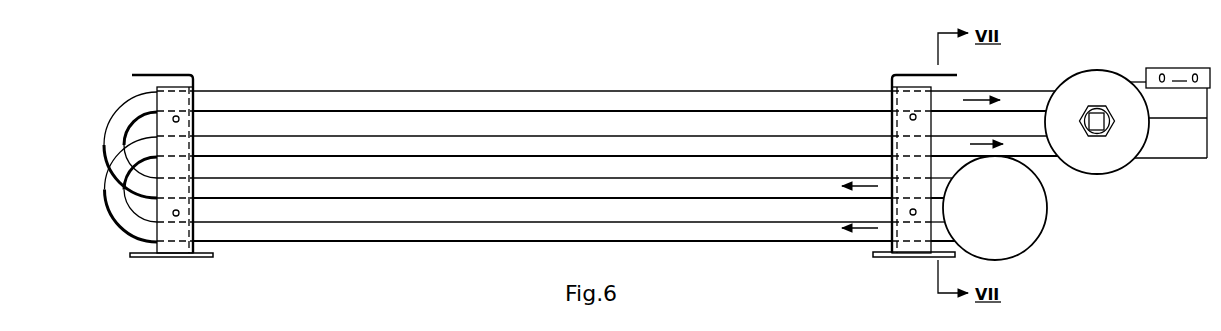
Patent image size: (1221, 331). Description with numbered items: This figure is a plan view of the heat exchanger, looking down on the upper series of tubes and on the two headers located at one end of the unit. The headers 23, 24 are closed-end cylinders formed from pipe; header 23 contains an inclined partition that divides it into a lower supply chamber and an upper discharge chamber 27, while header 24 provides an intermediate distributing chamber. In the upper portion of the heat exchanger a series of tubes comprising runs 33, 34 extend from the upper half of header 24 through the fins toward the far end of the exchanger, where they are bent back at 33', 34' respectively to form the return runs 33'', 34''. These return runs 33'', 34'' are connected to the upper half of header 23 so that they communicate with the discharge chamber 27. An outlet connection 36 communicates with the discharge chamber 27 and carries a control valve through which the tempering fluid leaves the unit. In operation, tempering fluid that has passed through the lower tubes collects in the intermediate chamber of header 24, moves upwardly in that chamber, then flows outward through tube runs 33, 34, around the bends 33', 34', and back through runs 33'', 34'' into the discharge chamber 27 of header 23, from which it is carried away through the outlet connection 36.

The tube run 33'' is at (624, 85).
The tube run 34'' is at (637, 163).
The tube run 33 is at (572, 222).
The tube run 34 is at (574, 247).
The bend 33' is at (112, 145).
The bend 34' is at (112, 189).
The discharge chamber 27 is at (1087, 87).
The header 23 is at (1097, 168).
The header 24 is at (1025, 244).
The outlet connection 36 is at (1177, 158).